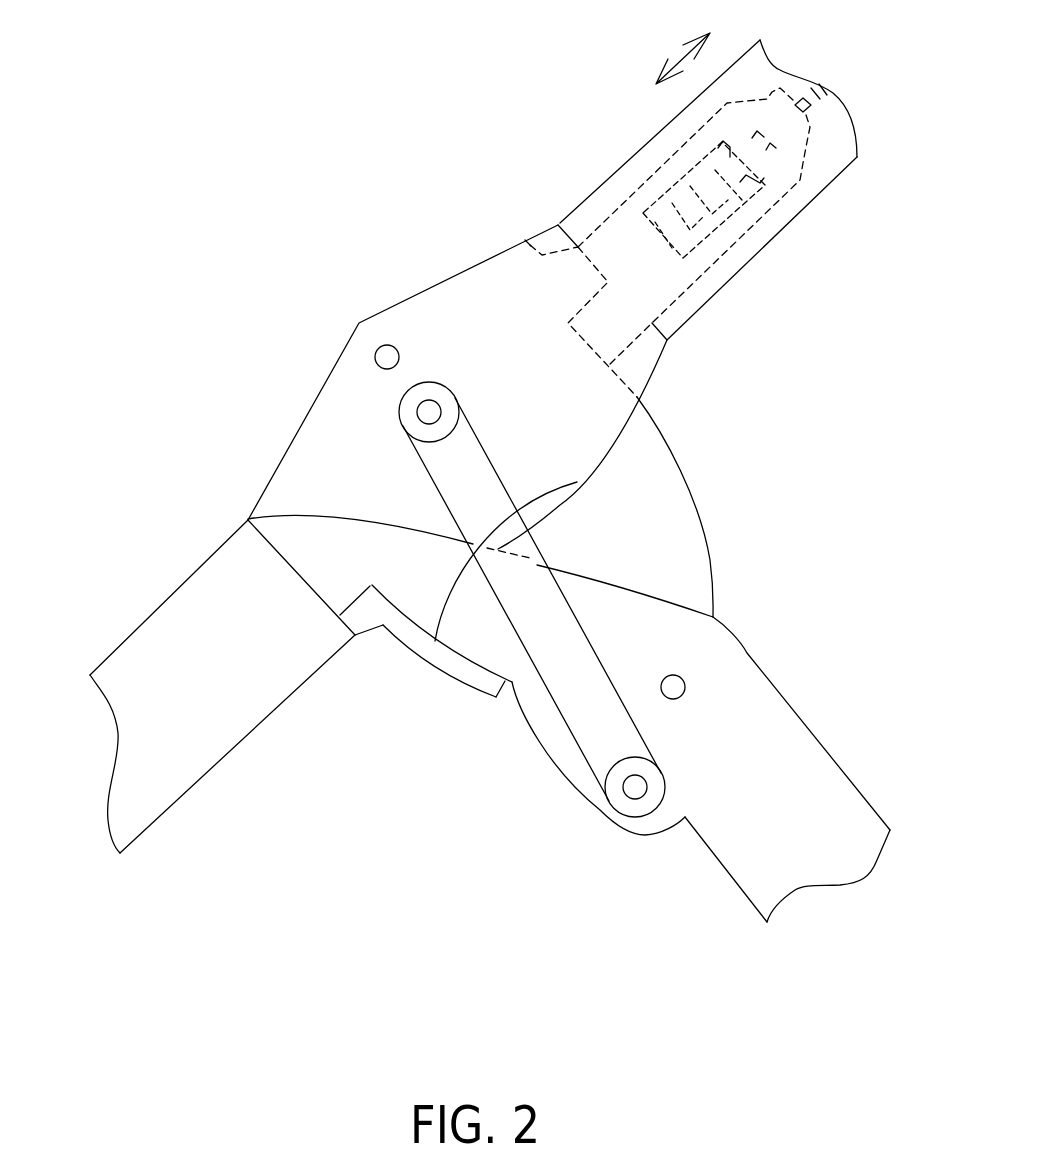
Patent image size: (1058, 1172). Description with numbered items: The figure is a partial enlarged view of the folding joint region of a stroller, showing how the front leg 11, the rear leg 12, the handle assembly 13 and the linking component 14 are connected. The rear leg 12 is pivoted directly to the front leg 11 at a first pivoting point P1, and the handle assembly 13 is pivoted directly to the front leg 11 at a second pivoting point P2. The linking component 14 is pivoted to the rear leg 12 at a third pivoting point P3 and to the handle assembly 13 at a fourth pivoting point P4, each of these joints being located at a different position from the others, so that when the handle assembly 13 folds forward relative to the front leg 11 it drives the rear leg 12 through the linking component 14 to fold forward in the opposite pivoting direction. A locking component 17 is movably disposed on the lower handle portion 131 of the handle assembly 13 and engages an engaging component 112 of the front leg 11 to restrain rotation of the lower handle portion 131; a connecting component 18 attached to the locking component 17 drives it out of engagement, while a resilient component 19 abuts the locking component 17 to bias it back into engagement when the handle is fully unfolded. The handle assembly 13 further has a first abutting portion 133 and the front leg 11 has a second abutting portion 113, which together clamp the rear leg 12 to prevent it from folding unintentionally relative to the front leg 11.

The front leg 11 is at (175, 627).
The rear leg 12 is at (794, 858).
The handle assembly 13 is at (842, 250).
The linking component 14 is at (577, 685).
The locking component 17 is at (613, 237).
The connecting component 18 is at (815, 100).
The resilient component 19 is at (687, 177).
The engaging component 112 is at (565, 277).
The second abutting portion 113 is at (432, 652).
The lower handle portion 131 is at (695, 307).
The first abutting portion 133 is at (577, 482).
The first pivoting point P1 is at (673, 687).
The second pivoting point P2 is at (387, 357).
The third pivoting point P3 is at (635, 787).
The fourth pivoting point P4 is at (429, 412).